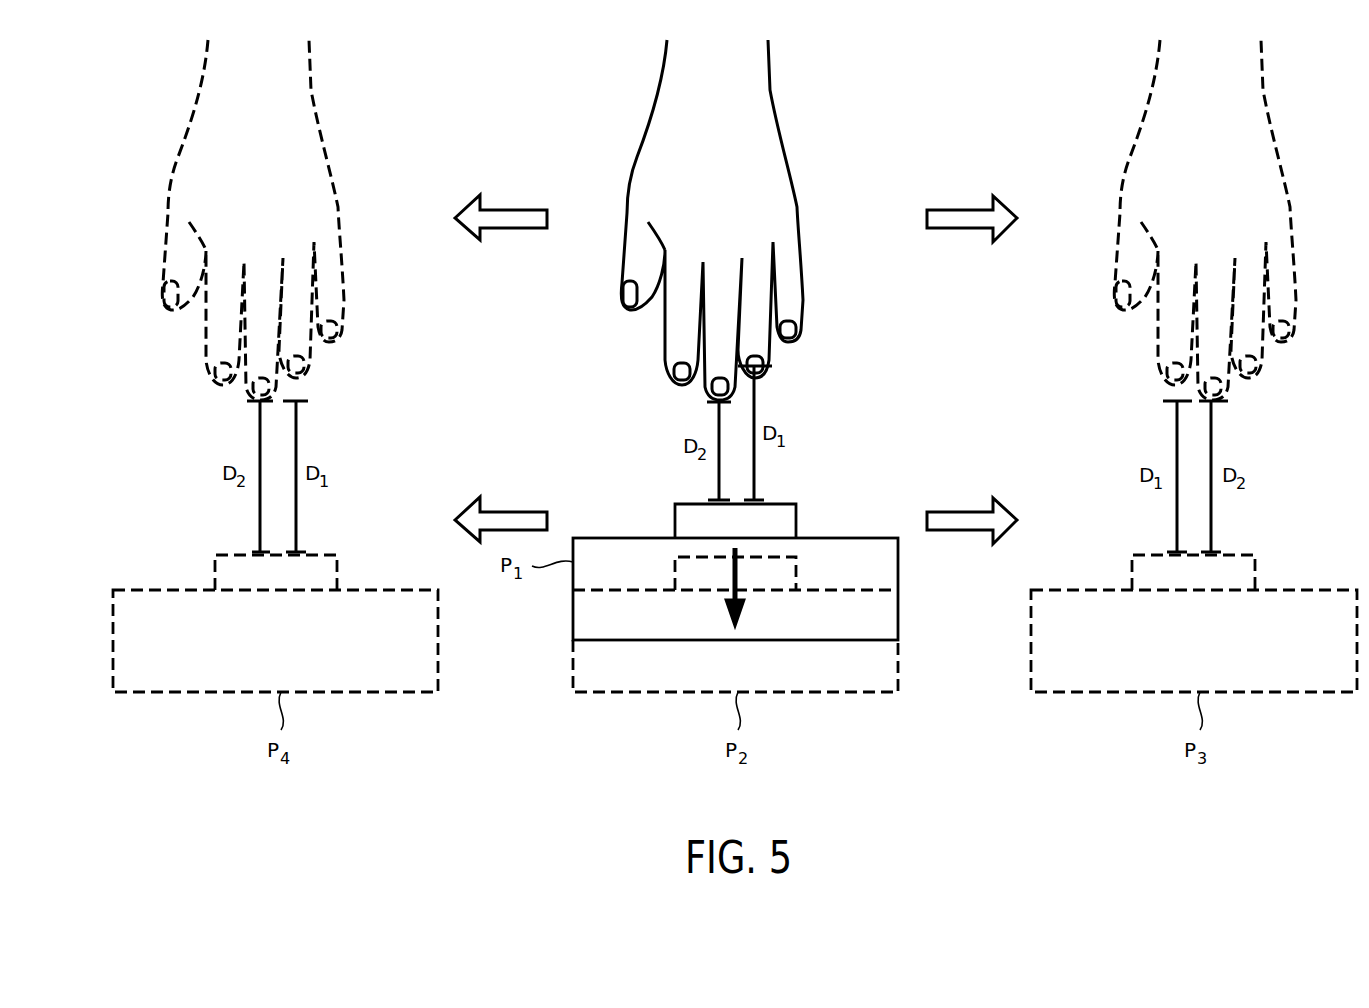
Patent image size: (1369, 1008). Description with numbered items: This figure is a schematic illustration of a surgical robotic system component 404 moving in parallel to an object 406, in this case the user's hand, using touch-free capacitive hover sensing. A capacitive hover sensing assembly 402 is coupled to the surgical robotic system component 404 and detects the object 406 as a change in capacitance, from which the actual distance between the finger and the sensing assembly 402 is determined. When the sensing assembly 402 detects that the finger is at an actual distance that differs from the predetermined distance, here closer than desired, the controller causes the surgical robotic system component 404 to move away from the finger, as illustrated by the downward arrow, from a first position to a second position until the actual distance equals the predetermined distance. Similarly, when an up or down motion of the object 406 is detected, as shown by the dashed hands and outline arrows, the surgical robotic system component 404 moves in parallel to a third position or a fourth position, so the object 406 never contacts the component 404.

The capacitive hover sensing assembly 402 is at (675, 520).
The surgical robotic system component 404 is at (845, 538).
The object 406 is at (738, 190).